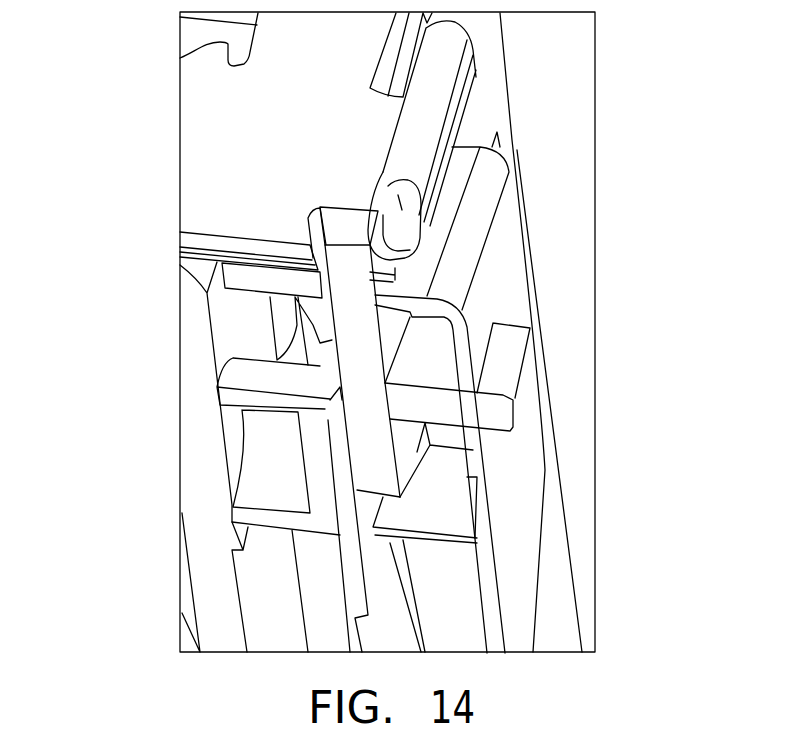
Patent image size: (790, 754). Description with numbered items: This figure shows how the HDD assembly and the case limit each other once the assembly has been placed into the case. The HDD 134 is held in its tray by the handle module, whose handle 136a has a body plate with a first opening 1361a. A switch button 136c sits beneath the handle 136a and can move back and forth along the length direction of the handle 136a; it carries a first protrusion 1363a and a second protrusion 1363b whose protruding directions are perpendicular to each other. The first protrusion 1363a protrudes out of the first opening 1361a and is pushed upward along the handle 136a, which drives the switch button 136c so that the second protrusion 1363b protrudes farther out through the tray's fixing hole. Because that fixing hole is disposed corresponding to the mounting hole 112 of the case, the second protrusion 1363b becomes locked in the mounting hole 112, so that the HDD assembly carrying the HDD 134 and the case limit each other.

The mounting hole 112 is at (312, 226).
The HDD 134 is at (195, 343).
The handle 136a is at (453, 192).
The switch button 136c is at (367, 445).
The first opening 1361a is at (488, 343).
The first protrusion 1363a is at (517, 390).
The second protrusion 1363b is at (354, 215).